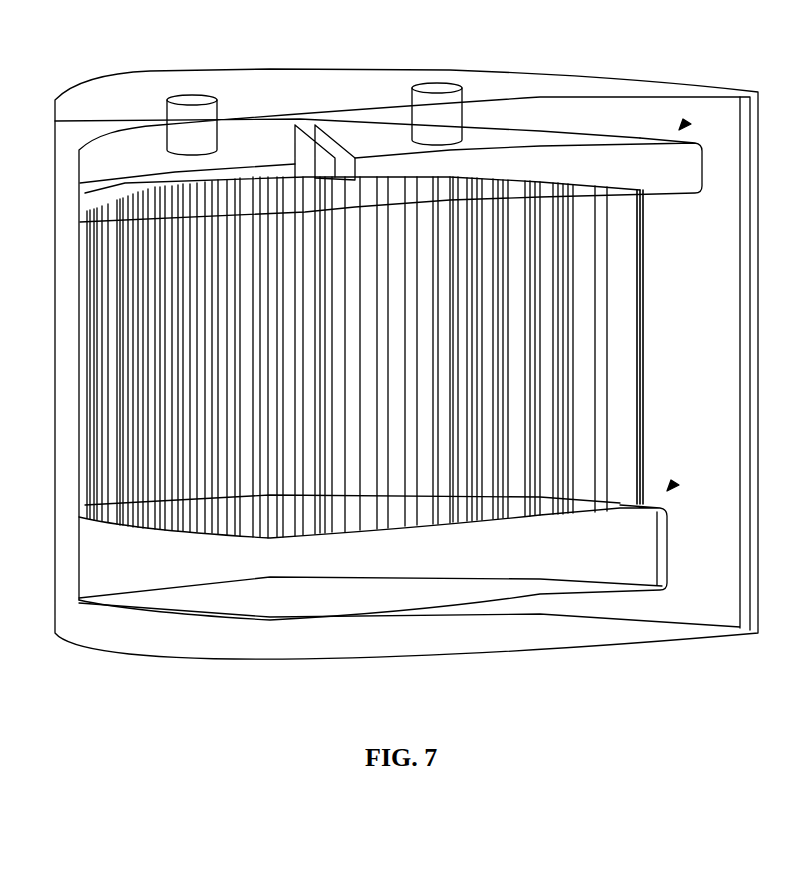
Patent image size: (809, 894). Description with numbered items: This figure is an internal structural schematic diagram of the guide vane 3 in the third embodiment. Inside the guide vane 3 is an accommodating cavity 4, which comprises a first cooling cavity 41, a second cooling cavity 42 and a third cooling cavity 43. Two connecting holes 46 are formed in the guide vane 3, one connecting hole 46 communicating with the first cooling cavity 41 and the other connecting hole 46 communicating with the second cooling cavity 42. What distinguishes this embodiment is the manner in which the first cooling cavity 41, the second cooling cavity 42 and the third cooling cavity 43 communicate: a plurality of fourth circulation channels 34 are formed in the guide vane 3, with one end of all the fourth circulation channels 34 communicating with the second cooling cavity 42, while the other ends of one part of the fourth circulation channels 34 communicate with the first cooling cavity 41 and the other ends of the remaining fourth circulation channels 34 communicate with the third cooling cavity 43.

The guide vane 3 is at (712, 358).
The accommodating cavity 4 is at (684, 122).
The fourth circulation channels 34 is at (140, 200).
The first cooling cavity 41 is at (143, 145).
The second cooling cavity 42 is at (563, 560).
The third cooling cavity 43 is at (543, 157).
The connecting holes 46 is at (200, 110).